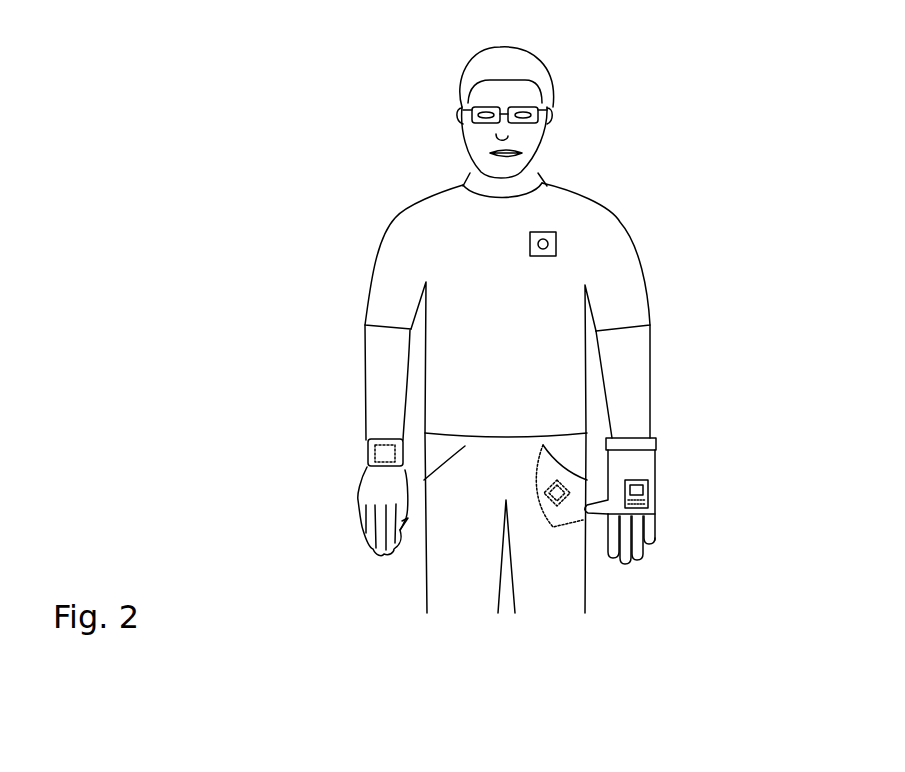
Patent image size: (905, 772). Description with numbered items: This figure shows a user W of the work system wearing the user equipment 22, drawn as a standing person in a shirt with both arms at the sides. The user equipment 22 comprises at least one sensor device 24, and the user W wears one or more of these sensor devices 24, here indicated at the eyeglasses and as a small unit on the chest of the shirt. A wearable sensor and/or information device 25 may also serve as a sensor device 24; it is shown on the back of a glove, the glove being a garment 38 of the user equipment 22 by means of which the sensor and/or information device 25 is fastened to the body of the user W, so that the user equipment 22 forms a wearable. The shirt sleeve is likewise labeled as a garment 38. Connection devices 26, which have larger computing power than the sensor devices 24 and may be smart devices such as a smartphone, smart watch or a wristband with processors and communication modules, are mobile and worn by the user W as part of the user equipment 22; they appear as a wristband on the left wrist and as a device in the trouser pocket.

The user equipment 22 is at (716, 50).
The user W is at (406, 200).
The sensor device 24 is at (545, 108).
The sensor and/or information device 25 is at (653, 503).
The connection device 26 is at (385, 455).
The garment 38 is at (634, 314).